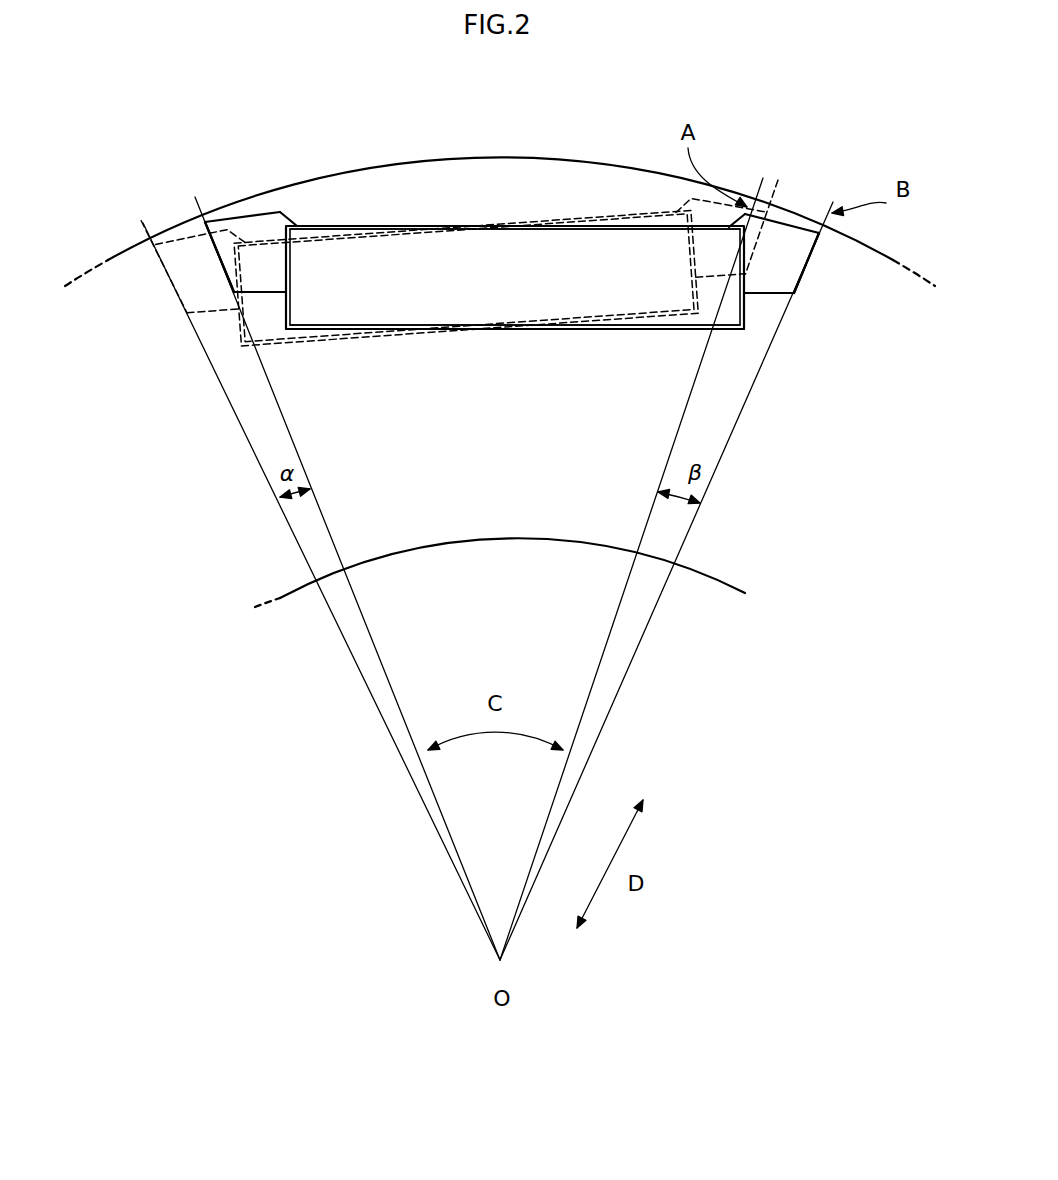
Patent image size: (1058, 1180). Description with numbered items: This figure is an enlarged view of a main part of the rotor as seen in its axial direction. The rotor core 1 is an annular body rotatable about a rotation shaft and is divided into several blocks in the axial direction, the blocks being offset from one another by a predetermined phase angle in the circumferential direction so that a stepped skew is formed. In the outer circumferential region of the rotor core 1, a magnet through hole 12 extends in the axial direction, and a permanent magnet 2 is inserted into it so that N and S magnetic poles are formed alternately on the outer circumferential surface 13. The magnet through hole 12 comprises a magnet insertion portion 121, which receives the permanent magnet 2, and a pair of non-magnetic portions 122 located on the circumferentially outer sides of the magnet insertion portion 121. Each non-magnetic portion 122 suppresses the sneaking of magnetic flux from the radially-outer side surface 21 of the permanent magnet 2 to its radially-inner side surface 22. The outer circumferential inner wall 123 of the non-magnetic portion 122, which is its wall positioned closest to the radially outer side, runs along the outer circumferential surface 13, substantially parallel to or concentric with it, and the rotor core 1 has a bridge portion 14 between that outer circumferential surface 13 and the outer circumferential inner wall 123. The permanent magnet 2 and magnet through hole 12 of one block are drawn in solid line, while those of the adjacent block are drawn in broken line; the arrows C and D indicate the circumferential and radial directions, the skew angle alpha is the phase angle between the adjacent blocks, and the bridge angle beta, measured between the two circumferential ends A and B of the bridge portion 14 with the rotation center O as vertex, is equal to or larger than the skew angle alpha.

The rotor core 1 is at (497, 523).
The permanent magnet 2 is at (420, 243).
The magnet through hole 12 is at (263, 276).
The outer circumferential surface 13 is at (580, 165).
The bridge portion 14 is at (235, 212).
The radially-outer side surface 21 is at (497, 227).
The radially-inner side surface 22 is at (588, 330).
The magnet insertion portion 121 is at (310, 327).
The non-magnetic portion 122 is at (260, 227).
The outer circumferential inner wall 123 is at (808, 226).